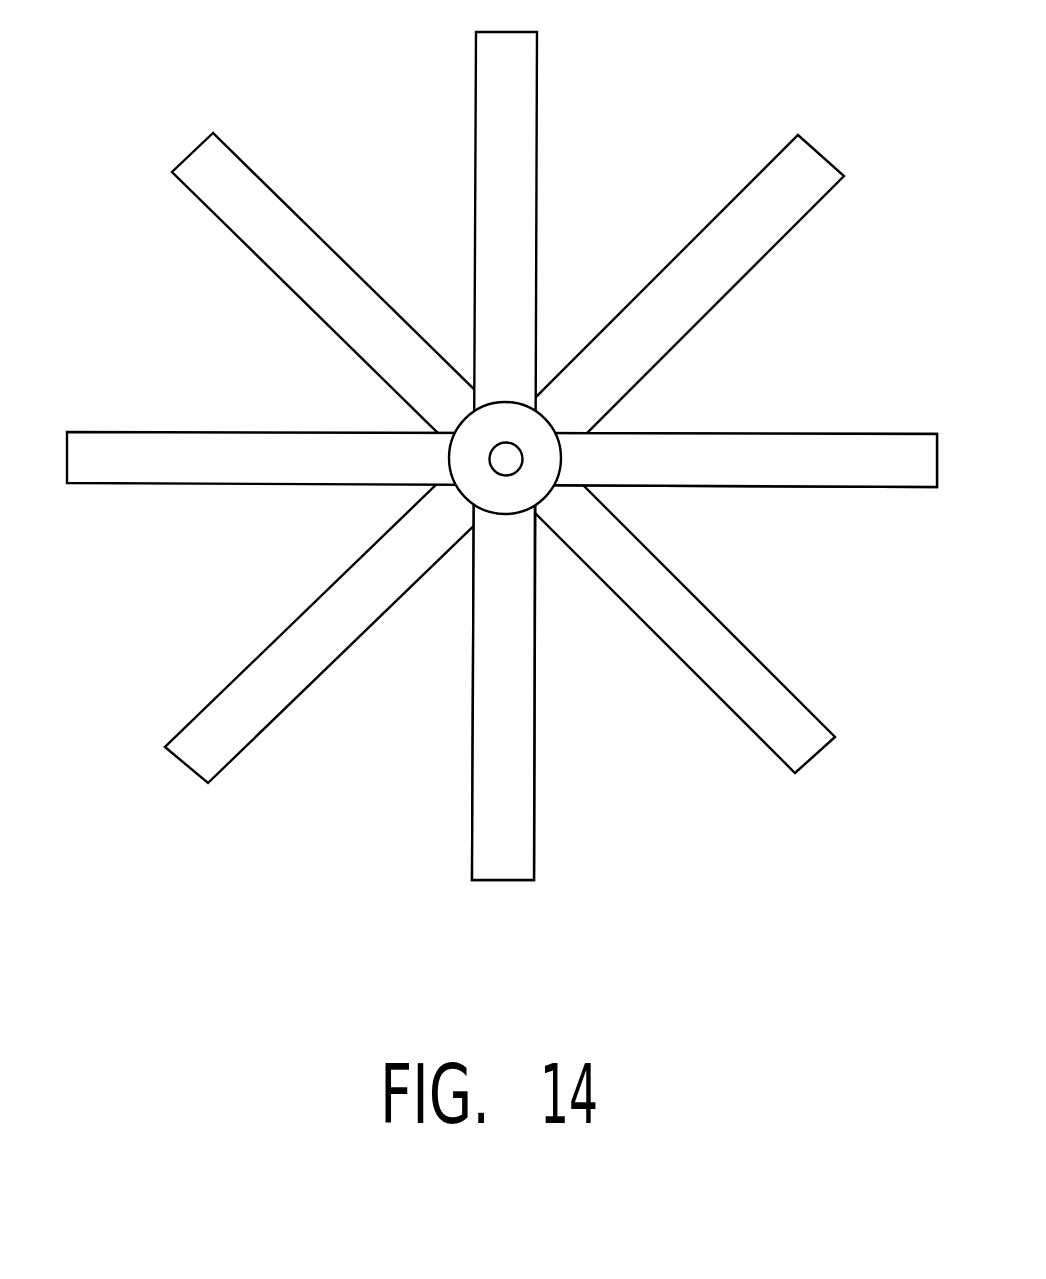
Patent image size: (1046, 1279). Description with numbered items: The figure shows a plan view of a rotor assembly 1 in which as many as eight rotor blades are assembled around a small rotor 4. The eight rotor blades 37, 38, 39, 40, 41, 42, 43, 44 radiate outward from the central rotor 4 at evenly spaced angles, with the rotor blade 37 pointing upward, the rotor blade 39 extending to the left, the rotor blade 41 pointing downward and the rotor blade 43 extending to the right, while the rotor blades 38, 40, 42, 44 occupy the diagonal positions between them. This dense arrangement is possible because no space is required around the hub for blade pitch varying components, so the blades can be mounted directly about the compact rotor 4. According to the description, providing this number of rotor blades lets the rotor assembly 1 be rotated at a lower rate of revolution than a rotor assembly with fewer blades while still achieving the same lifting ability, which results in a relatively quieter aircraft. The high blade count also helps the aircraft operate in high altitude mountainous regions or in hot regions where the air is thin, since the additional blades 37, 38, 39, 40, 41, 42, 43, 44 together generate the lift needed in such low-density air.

The rotor assembly 1 is at (502, 529).
The rotor 4 is at (538, 470).
The rotor blade 37 is at (519, 120).
The rotor blade 38 is at (233, 165).
The rotor blade 39 is at (138, 455).
The rotor blade 40 is at (302, 642).
The rotor blade 41 is at (492, 732).
The rotor blade 42 is at (733, 665).
The rotor blade 43 is at (788, 447).
The rotor blade 44 is at (747, 237).